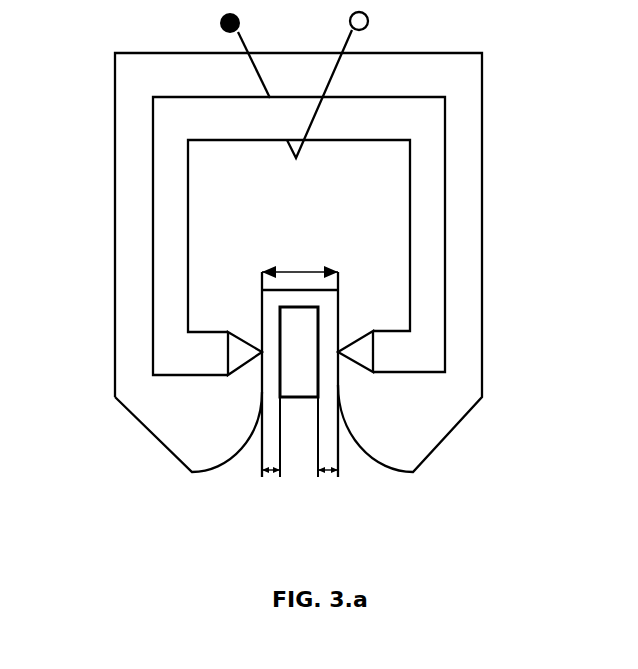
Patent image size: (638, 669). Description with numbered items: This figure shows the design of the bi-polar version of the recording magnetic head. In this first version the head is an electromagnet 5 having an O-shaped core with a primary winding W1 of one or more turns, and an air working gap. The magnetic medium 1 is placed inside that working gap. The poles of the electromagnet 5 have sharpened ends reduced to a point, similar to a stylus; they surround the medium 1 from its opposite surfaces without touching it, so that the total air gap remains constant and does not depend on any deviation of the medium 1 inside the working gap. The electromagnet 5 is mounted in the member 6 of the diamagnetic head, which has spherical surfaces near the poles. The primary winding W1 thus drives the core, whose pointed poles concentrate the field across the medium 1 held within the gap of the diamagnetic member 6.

The medium 1 is at (302, 363).
The electromagnet 5 is at (173, 347).
The member of the diamagnetic head 6 is at (137, 290).
The primary winding W1 is at (294, 80).